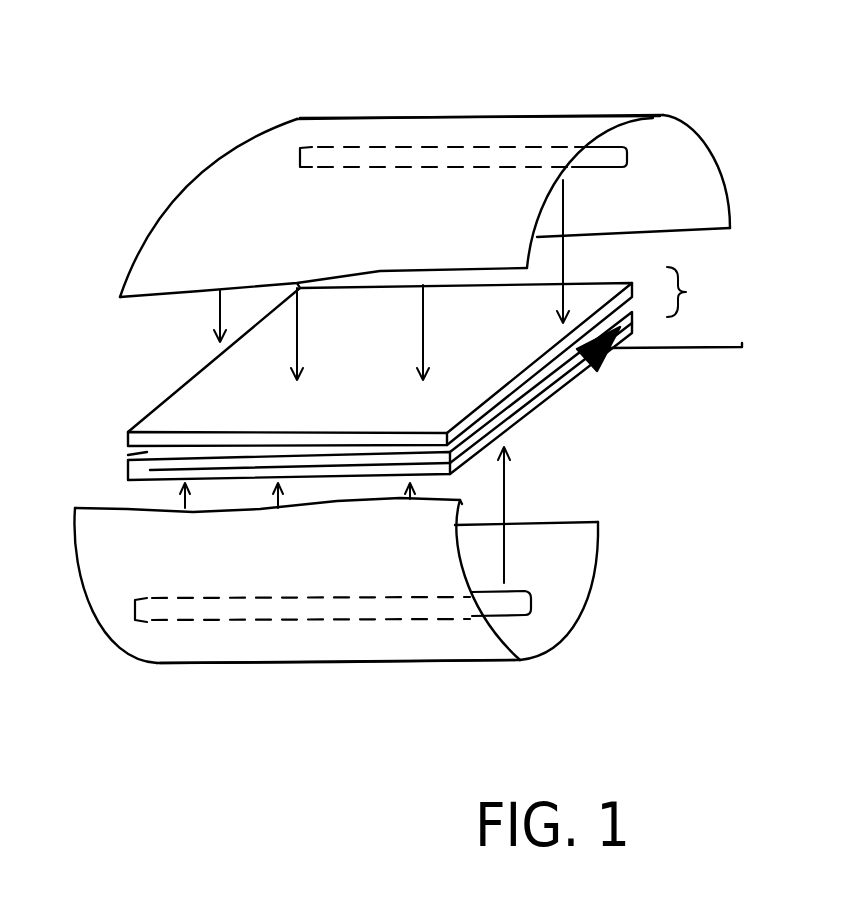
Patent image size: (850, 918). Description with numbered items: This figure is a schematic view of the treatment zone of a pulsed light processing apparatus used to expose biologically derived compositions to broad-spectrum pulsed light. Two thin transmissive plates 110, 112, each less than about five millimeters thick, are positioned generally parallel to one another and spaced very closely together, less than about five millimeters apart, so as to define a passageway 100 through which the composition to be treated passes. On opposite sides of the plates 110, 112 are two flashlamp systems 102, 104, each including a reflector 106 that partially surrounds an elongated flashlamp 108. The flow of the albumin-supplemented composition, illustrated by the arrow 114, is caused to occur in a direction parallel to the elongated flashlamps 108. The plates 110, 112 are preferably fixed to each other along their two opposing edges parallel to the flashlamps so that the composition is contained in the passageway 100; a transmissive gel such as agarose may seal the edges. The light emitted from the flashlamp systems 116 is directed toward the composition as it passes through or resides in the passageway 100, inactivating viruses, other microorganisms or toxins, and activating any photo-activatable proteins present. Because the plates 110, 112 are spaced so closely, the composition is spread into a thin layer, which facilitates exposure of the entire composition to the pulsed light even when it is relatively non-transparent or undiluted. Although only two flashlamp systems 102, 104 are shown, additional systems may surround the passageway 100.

The passageway 100 is at (690, 283).
The flashlamp system 102 is at (642, 94).
The flashlamp system 104 is at (357, 677).
The reflector 106 is at (282, 234).
The flashlamp 108 is at (428, 158).
The transmissive plate 110 is at (511, 363).
The transmissive plate 112 is at (552, 388).
The arrow 114 is at (723, 348).
The light emitted from the flashlamp systems 116 is at (565, 257).